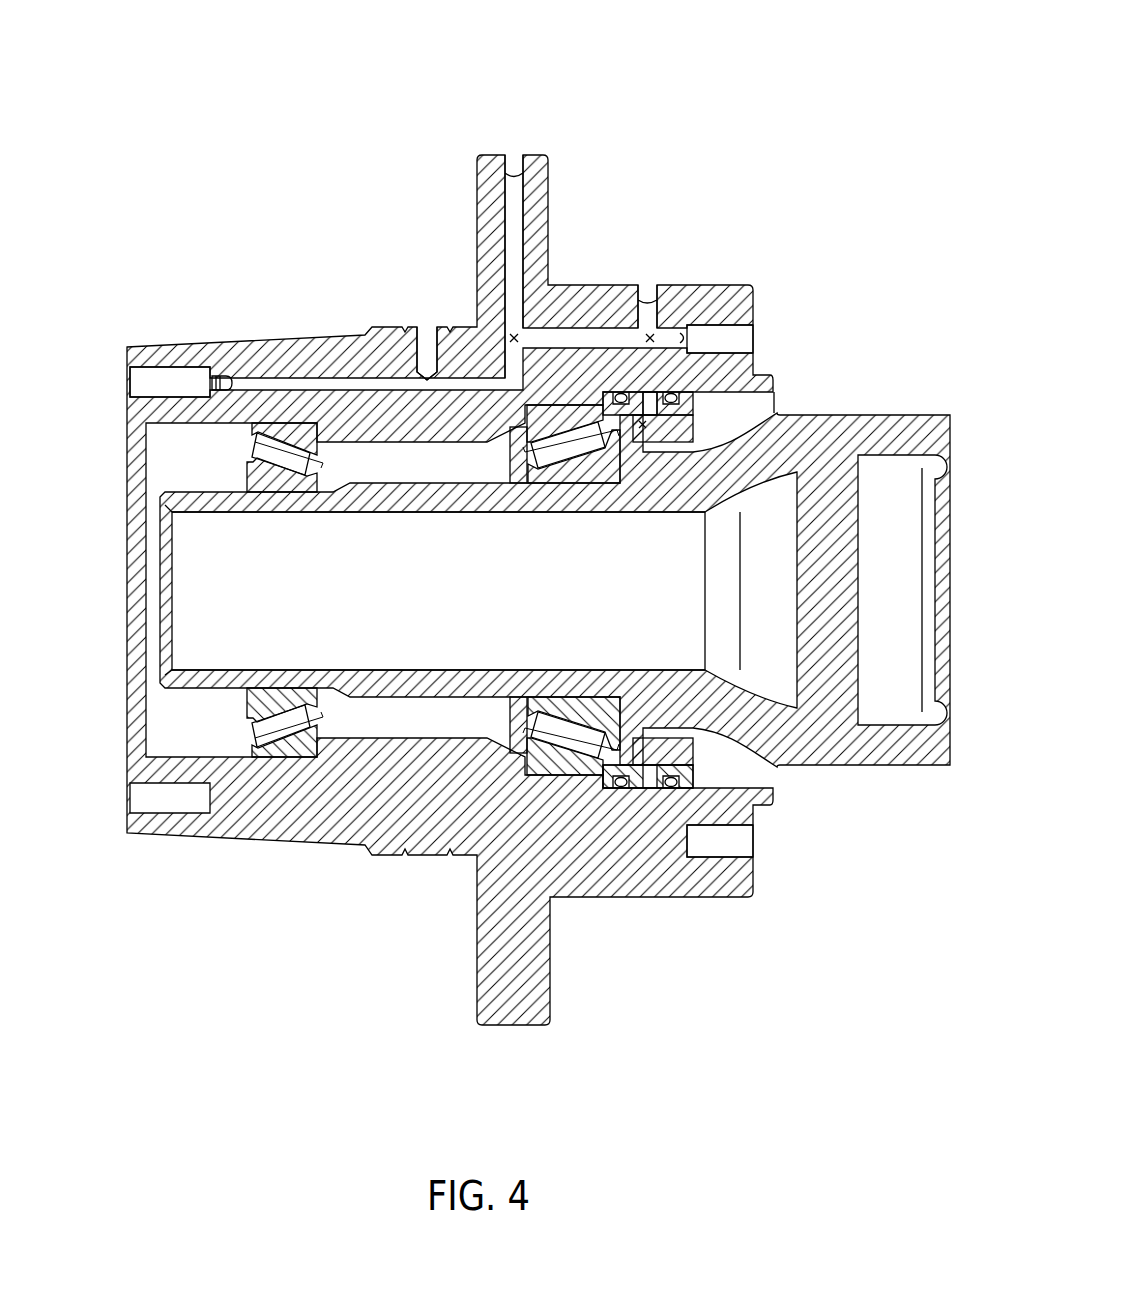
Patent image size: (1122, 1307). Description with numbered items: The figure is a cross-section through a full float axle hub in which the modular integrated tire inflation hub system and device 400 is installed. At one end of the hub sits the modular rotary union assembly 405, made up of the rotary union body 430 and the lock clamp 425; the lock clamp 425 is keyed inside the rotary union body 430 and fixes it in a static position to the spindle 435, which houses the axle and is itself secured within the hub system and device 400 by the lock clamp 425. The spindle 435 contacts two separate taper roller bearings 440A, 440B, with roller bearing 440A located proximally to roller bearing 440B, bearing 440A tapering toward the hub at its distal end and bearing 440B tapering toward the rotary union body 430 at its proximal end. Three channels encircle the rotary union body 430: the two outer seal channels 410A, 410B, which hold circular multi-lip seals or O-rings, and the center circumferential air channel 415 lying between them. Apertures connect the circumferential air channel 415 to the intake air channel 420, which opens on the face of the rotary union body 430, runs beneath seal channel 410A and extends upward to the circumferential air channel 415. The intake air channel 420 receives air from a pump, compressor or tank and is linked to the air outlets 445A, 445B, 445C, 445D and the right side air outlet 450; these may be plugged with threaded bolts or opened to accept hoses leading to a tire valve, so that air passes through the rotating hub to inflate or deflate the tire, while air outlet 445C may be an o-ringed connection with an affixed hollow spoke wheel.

The hub system and device 400 is at (693, 84).
The modular rotary union assembly 405 is at (693, 803).
The seal channel 410A is at (672, 397).
The seal channel 410B is at (622, 393).
The circumferential air channel 415 is at (647, 393).
The intake air channel 420 is at (683, 423).
The lock clamp 425 is at (693, 787).
The rotary union body 430 is at (690, 763).
The spindle 435 is at (267, 618).
The taper roller bearing 440A is at (540, 772).
The taper roller bearing 440B is at (285, 748).
The air outlet 445A is at (648, 287).
The air outlet 445B is at (515, 157).
The air outlet 445C is at (427, 323).
The air outlet 445D is at (126, 376).
The right side air outlet 450 is at (755, 340).